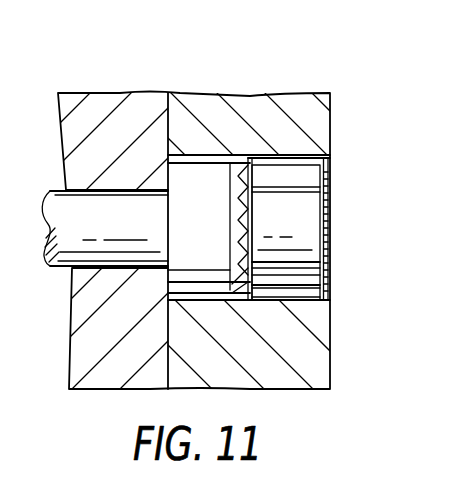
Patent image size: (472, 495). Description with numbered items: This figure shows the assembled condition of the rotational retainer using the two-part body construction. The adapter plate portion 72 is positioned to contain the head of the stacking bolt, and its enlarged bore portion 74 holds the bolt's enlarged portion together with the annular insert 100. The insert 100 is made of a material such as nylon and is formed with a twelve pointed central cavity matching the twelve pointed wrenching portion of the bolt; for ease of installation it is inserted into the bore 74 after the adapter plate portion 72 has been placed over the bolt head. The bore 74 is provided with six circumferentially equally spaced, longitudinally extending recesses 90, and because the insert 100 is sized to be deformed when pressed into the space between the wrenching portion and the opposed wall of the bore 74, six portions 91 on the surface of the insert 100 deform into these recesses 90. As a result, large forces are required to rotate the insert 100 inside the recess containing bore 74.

The adapter plate portion 72 is at (247, 95).
The enlarged bore portion 74 is at (214, 286).
The recesses 90 is at (240, 167).
The annular insert 100 is at (307, 287).
The deformed portions 91 is at (319, 152).